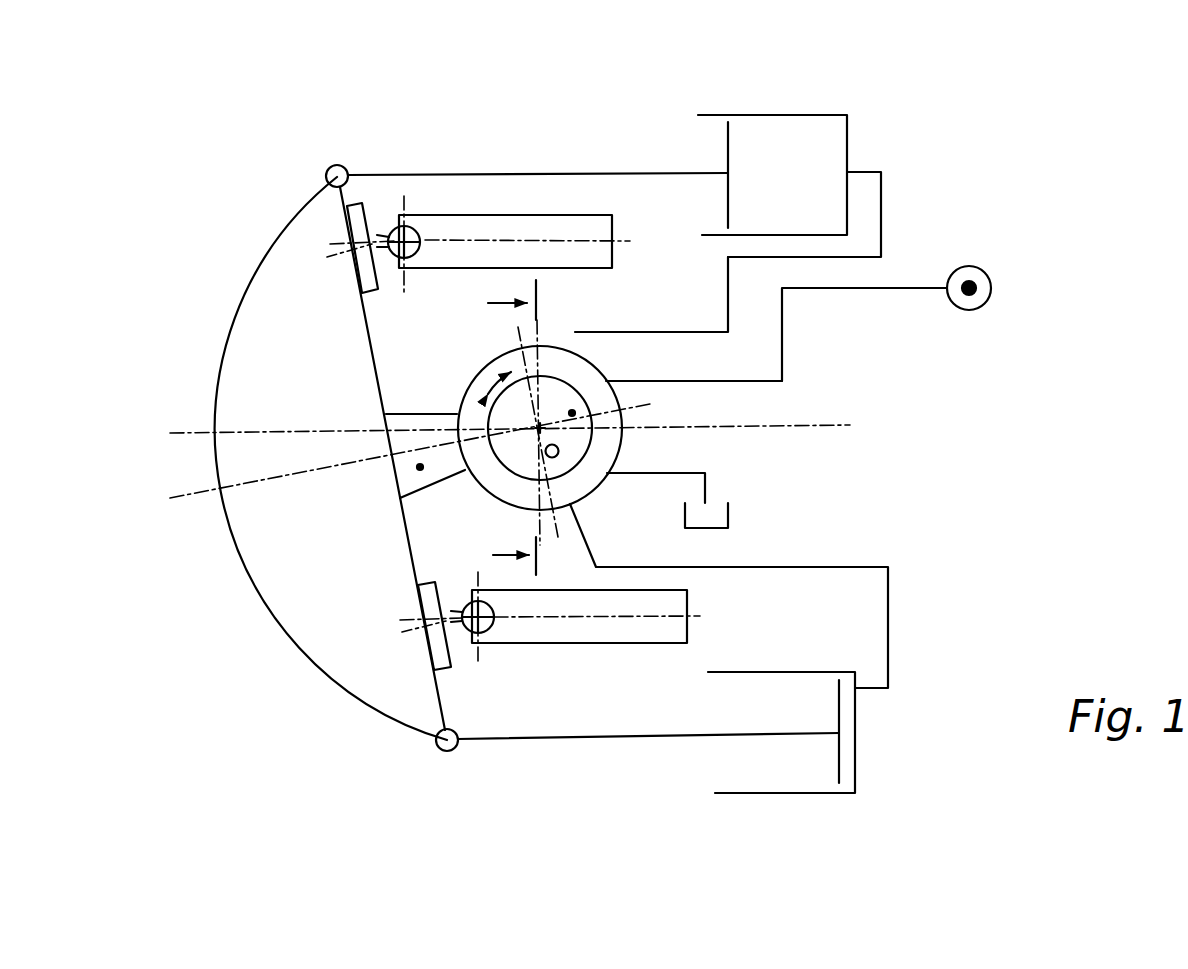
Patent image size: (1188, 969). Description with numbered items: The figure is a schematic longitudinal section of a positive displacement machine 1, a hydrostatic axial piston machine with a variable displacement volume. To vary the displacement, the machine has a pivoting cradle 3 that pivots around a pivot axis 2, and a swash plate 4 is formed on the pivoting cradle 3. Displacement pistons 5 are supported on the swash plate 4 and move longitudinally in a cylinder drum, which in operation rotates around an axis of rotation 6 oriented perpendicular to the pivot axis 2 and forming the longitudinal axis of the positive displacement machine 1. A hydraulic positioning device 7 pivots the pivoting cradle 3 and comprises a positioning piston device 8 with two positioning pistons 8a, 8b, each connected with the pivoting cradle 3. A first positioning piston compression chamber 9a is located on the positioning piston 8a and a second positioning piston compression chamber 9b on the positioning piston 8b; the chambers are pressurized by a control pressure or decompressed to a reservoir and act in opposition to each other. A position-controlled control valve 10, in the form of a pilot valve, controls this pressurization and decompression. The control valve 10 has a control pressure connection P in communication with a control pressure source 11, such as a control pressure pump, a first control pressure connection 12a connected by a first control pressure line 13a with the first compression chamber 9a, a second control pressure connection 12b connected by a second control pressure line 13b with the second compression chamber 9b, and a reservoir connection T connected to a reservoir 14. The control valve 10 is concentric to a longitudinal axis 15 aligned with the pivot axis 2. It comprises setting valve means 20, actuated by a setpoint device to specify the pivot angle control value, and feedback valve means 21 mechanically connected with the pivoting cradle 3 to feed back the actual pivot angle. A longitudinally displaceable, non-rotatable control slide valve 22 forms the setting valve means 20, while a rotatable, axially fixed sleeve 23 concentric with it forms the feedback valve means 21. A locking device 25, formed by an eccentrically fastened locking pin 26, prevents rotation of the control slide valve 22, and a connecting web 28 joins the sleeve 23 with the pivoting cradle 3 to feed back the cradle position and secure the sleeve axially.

The positive displacement machine 1 is at (360, 124).
The pivot axis 2 is at (540, 428).
The pivoting cradle 3 is at (262, 303).
The swash plate 4 is at (370, 312).
The displacement pistons 5 is at (455, 218).
The axis of rotation 6 is at (822, 414).
The hydraulic positioning device 7 is at (888, 111).
The positioning piston device 8 is at (756, 115).
The positioning piston 8a is at (597, 148).
The positioning piston 8b is at (855, 781).
The first positioning piston compression chamber 9a is at (816, 200).
The second positioning piston compression chamber 9b is at (846, 720).
The control valve 10 is at (473, 488).
The control pressure source 11 is at (992, 288).
The first control pressure connection 12a is at (563, 366).
The second control pressure connection 12b is at (566, 494).
The first control pressure line 13a is at (880, 207).
The second control pressure line 13b is at (889, 640).
The reservoir 14 is at (728, 518).
The longitudinal axis 15 is at (593, 378).
The setting valve means 20 is at (572, 413).
The feedback valve means 21 is at (466, 406).
The control slide valve 22 is at (743, 375).
The sleeve 23 is at (475, 366).
The locking device 25 is at (558, 455).
The locking pin 26 is at (664, 509).
The connecting web 28 is at (420, 467).
The control pressure connection P is at (606, 392).
The reservoir connection T is at (600, 462).